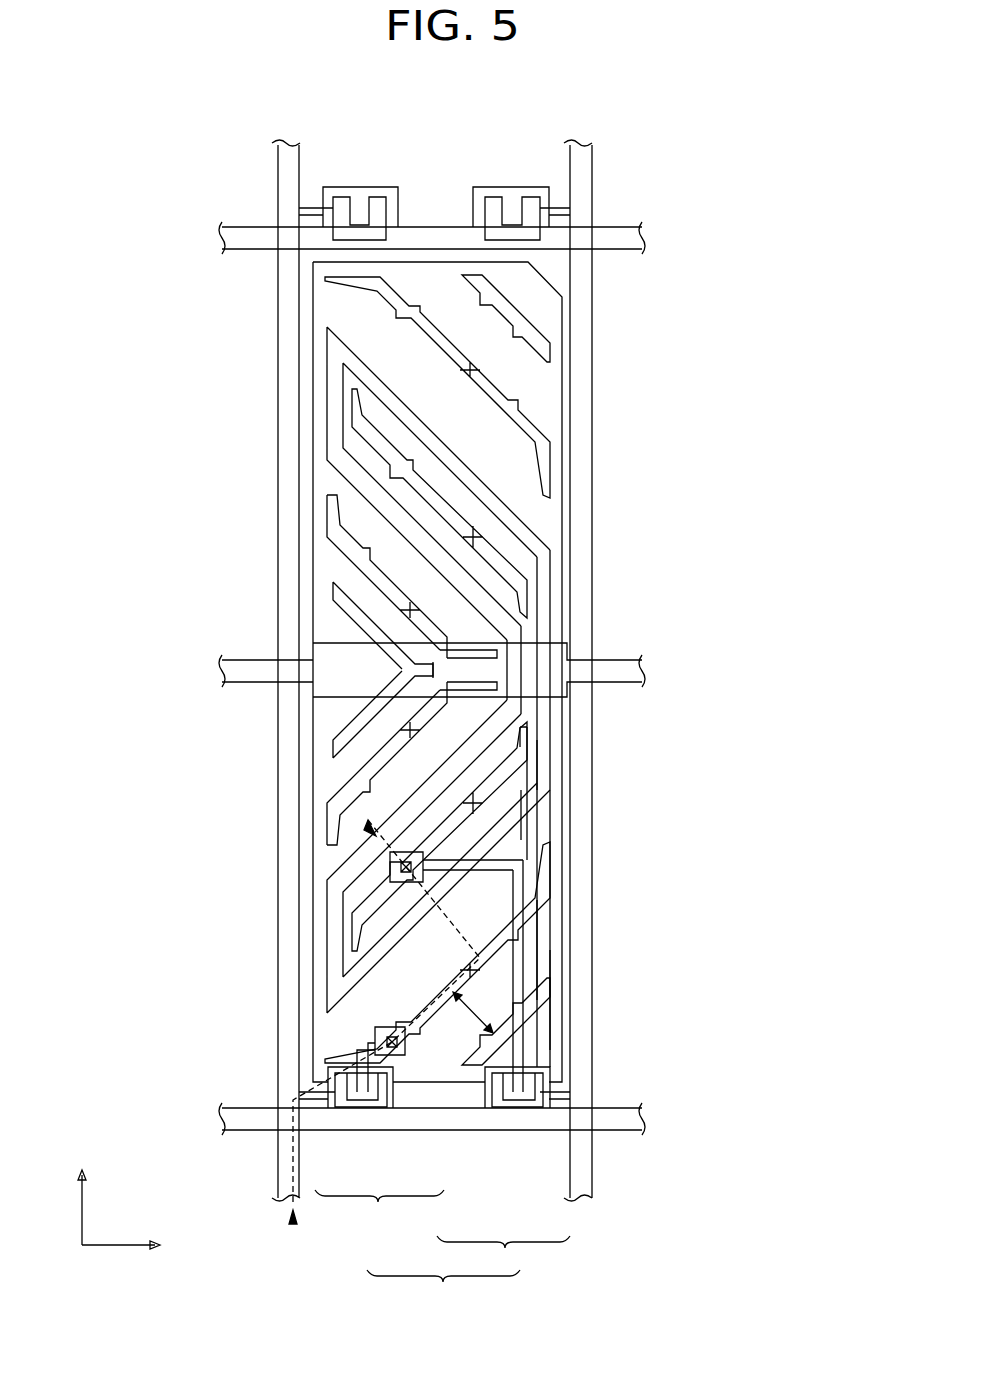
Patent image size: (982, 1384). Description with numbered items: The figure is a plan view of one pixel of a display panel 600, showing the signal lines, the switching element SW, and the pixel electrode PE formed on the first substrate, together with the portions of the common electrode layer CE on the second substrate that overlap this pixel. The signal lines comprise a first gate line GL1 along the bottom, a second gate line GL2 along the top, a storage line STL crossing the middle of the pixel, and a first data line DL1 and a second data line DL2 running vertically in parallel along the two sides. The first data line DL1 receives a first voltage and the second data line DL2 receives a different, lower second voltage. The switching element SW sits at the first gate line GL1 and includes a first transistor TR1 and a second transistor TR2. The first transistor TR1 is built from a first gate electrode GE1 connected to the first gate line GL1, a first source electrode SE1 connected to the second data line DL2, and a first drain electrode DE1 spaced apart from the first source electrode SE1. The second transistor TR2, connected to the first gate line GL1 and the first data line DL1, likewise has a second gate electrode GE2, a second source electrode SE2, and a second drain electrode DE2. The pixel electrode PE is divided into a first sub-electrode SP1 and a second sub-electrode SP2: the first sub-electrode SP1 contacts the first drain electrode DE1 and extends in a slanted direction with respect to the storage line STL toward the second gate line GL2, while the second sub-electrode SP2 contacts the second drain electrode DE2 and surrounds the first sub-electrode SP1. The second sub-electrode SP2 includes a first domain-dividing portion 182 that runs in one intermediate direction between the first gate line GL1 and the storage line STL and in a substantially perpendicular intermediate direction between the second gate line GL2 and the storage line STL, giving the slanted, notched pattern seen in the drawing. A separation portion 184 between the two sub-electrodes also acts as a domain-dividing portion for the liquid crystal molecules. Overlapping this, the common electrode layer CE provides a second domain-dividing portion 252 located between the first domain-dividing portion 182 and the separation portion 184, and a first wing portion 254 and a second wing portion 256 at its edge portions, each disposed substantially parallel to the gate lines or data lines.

The display panel 600 is at (461, 109).
The first data line DL1 is at (282, 162).
The second data line DL2 is at (595, 167).
The first gate line GL1 is at (625, 1135).
The second gate line GL2 is at (625, 238).
The storage line STL is at (626, 680).
The pixel electrode PE is at (658, 508).
The first sub-electrode SP1 is at (527, 562).
The second sub-electrode SP2 is at (540, 513).
The common electrode layer CE is at (515, 737).
The second wing portion 256 is at (530, 762).
The second domain-dividing portion 252 is at (490, 788).
The separation portion 184 is at (515, 818).
The first domain-dividing portion 182 is at (541, 948).
The first wing portion 254 is at (548, 993).
The first gate electrode GE1 is at (547, 1097).
The first source electrode SE1 is at (520, 1112).
The first drain electrode DE1 is at (510, 1097).
The second gate electrode GE2 is at (336, 1112).
The second source electrode SE2 is at (362, 1112).
The second drain electrode DE2 is at (368, 1094).
The first transistor TR1 is at (503, 1252).
The second transistor TR2 is at (379, 1207).
The switching element SW is at (443, 1286).